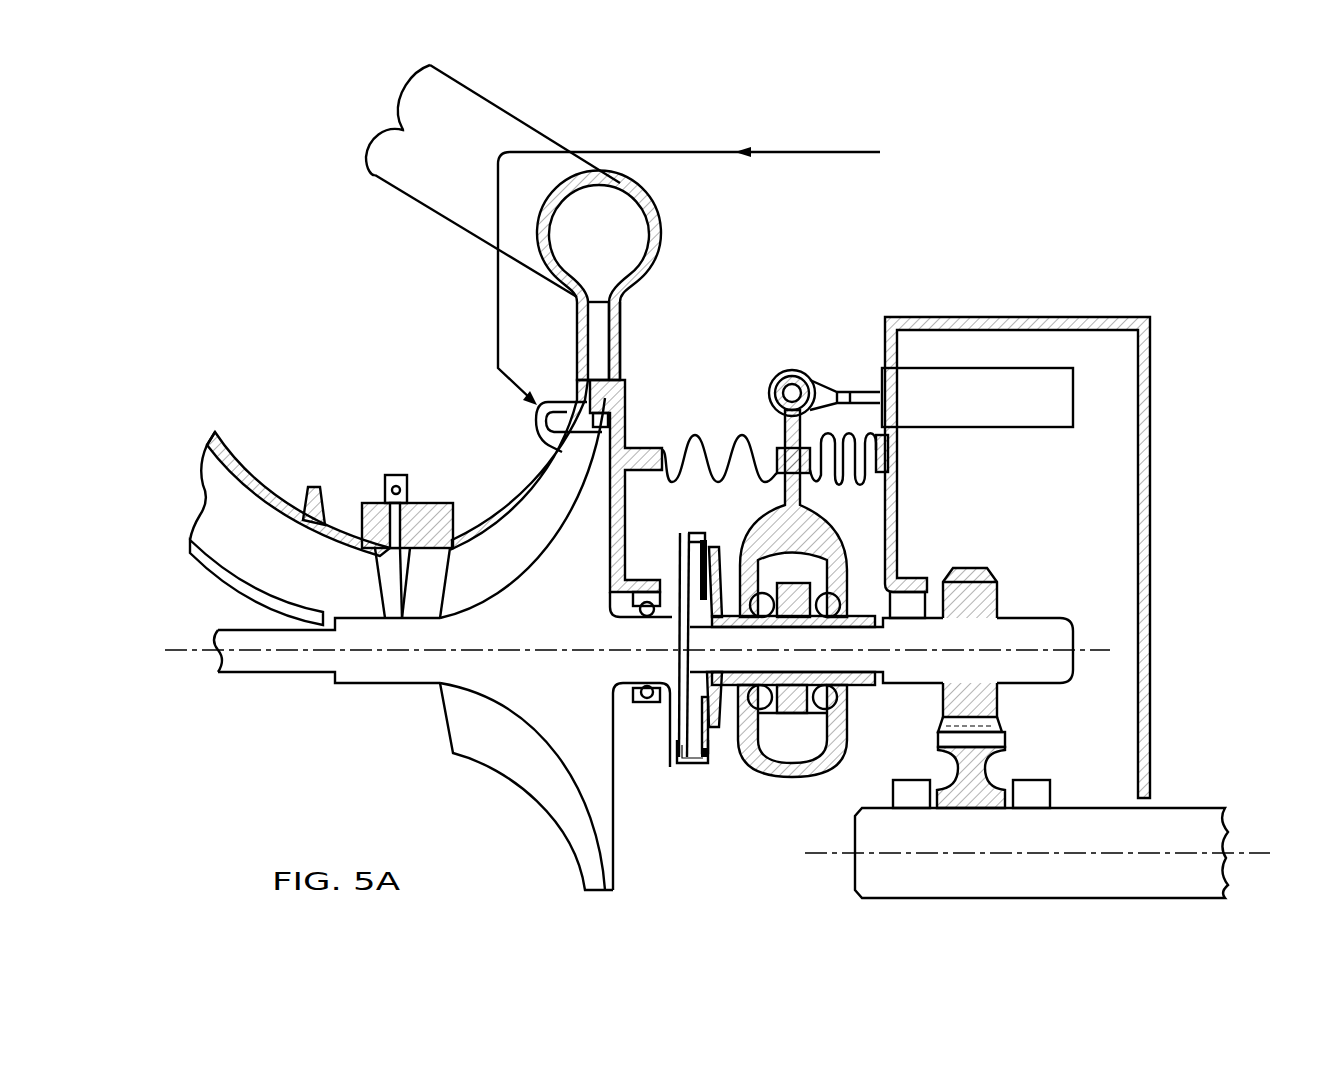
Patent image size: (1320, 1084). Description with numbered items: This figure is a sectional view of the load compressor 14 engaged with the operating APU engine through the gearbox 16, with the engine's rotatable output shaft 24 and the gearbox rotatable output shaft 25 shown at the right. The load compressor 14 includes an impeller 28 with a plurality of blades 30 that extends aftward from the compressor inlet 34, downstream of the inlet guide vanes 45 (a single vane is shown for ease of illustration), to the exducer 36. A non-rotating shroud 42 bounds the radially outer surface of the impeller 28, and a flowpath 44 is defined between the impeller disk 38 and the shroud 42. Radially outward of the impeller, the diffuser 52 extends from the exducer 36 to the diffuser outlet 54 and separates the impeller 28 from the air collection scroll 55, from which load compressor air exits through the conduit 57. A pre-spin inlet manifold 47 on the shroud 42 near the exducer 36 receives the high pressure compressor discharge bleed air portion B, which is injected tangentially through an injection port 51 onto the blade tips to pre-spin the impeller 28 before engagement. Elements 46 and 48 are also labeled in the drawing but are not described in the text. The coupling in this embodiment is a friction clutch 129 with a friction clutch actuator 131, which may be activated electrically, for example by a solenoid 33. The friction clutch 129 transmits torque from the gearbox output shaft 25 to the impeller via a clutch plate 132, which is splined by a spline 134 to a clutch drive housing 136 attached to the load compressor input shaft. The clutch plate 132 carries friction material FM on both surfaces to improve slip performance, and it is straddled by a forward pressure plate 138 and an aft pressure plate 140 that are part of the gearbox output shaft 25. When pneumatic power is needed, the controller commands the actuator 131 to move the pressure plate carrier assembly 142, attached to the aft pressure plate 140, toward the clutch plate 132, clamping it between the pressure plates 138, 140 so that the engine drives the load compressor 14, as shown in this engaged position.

The load compressor 14 is at (484, 307).
The gearbox 16 is at (1168, 440).
The rotatable output shaft 24 is at (1218, 833).
The gearbox rotatable output shaft 25 is at (903, 678).
The impeller 28 is at (463, 663).
The blades 30 is at (530, 781).
The solenoid 33 is at (994, 416).
The compressor inlet 34 is at (290, 528).
The exducer 36 is at (677, 627).
The disk 38 is at (526, 644).
The shroud 42 is at (524, 506).
The flowpath 44 is at (530, 572).
The inlet guide vanes 45 is at (376, 569).
The vane 46 is at (278, 495).
The pre-spin inlet manifold 47 is at (537, 422).
The impeller back face 48 is at (552, 570).
The injection port 51 is at (602, 430).
The diffuser 52 is at (618, 343).
The diffuser outlet 54 is at (624, 298).
The air collection scroll 55 is at (663, 228).
The conduit 57 is at (535, 124).
The friction clutch 129 is at (693, 695).
The friction clutch actuator 131 is at (818, 358).
The clutch plate 132 is at (691, 532).
The spline 134 is at (712, 765).
The clutch drive housing 136 is at (676, 757).
The forward pressure plate 138 is at (680, 572).
The aft pressure plate 140 is at (716, 560).
The pressure plate carrier assembly 142 is at (804, 509).
The compressor discharge bleed air portion B is at (822, 152).
The friction material FM is at (681, 735).